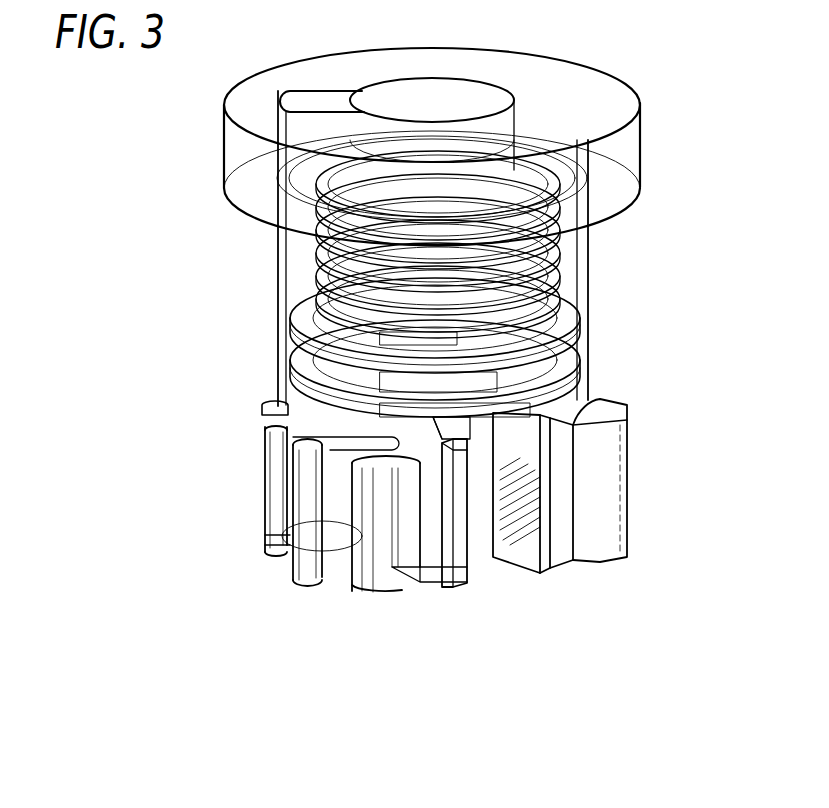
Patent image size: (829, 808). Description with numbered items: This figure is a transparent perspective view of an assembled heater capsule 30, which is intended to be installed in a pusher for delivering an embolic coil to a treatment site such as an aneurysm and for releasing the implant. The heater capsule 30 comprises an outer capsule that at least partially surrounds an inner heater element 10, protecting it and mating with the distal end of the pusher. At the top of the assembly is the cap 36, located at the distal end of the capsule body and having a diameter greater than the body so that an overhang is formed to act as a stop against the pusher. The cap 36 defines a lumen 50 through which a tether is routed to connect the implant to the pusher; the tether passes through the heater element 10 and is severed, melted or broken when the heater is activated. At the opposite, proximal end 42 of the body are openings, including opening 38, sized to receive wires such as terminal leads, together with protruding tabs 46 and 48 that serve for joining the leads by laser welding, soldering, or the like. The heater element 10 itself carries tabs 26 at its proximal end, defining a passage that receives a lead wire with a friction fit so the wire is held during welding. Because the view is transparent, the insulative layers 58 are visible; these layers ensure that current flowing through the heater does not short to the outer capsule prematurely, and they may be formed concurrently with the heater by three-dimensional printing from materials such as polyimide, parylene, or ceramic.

The heater element 10 is at (565, 273).
The tabs 26 is at (598, 558).
The heater capsule 30 is at (238, 318).
The cap 36 is at (593, 97).
The opening 38 is at (338, 584).
The proximal end 42 is at (438, 588).
The protruding tab 46 is at (300, 585).
The protruding tab 48 is at (262, 553).
The lumen 50 is at (463, 100).
The insulative layers 58 is at (572, 338).